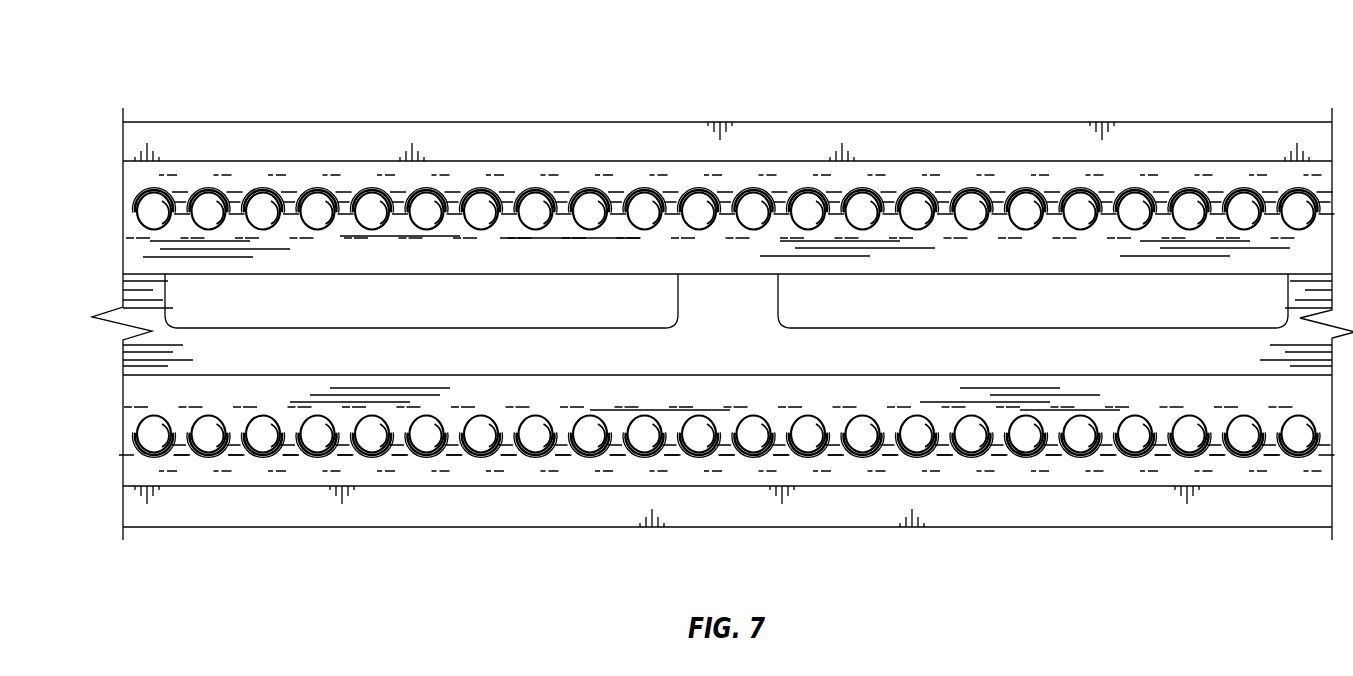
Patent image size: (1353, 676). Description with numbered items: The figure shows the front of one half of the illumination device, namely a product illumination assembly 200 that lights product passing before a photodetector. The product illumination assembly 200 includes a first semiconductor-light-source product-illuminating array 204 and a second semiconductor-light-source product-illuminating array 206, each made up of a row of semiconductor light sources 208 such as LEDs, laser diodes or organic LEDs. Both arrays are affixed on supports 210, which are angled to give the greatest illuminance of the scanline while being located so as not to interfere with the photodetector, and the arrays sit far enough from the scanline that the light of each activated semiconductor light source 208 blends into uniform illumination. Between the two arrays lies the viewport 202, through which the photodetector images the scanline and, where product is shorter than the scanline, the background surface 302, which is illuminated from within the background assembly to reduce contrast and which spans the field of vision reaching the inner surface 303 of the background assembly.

The product illumination assembly 200 is at (152, 62).
The viewport 202 is at (435, 295).
The first semiconductor-light-source product-illuminating array 204 is at (124, 212).
The second semiconductor-light-source product-illuminating array 206 is at (124, 432).
The semiconductor light source 208 is at (863, 217).
The support 210 is at (672, 173).
The background surface 302 is at (748, 369).
The inner surface 303 is at (748, 311).